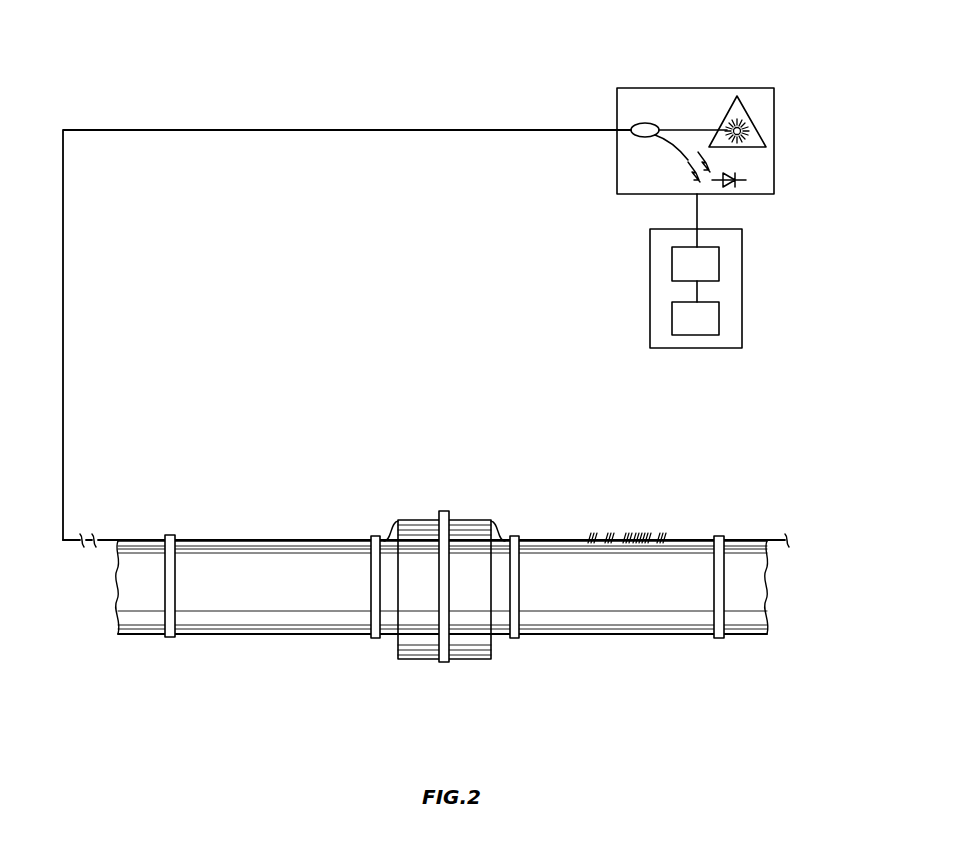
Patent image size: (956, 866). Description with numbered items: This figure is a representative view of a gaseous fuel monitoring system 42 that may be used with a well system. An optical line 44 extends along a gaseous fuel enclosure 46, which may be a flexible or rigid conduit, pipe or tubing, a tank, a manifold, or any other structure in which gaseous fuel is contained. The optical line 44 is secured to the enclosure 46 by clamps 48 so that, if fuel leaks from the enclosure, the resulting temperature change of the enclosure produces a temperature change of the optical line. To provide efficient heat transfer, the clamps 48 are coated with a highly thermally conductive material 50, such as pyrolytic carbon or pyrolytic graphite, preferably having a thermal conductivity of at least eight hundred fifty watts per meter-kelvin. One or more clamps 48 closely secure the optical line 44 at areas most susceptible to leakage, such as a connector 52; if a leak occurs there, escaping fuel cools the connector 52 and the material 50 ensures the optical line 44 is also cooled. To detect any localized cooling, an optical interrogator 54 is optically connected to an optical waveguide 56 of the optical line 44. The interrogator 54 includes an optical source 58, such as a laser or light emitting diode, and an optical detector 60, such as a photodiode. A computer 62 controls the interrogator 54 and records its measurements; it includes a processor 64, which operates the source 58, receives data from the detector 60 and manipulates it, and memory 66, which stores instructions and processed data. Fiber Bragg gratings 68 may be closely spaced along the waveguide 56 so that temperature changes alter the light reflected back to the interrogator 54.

The gaseous fuel monitoring system 42 is at (307, 104).
The optical line 44 is at (208, 540).
The gaseous fuel enclosure 46 is at (253, 634).
The clamps 48 is at (167, 637).
The highly thermally conductive material 50 is at (170, 565).
The connector 52 is at (466, 659).
The optical interrogator 54 is at (670, 78).
The optical waveguide 56 is at (552, 128).
The optical source 58 is at (750, 110).
The optical detector 60 is at (740, 177).
The computer 62 is at (642, 266).
The processor 64 is at (719, 258).
The memory 66 is at (719, 309).
The fiber Bragg gratings 68 is at (597, 533).